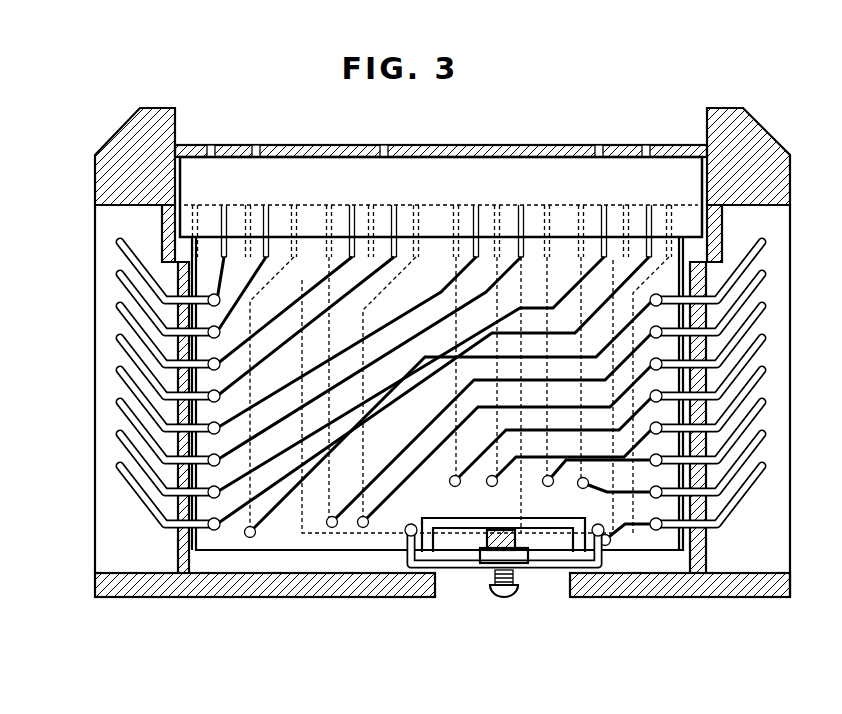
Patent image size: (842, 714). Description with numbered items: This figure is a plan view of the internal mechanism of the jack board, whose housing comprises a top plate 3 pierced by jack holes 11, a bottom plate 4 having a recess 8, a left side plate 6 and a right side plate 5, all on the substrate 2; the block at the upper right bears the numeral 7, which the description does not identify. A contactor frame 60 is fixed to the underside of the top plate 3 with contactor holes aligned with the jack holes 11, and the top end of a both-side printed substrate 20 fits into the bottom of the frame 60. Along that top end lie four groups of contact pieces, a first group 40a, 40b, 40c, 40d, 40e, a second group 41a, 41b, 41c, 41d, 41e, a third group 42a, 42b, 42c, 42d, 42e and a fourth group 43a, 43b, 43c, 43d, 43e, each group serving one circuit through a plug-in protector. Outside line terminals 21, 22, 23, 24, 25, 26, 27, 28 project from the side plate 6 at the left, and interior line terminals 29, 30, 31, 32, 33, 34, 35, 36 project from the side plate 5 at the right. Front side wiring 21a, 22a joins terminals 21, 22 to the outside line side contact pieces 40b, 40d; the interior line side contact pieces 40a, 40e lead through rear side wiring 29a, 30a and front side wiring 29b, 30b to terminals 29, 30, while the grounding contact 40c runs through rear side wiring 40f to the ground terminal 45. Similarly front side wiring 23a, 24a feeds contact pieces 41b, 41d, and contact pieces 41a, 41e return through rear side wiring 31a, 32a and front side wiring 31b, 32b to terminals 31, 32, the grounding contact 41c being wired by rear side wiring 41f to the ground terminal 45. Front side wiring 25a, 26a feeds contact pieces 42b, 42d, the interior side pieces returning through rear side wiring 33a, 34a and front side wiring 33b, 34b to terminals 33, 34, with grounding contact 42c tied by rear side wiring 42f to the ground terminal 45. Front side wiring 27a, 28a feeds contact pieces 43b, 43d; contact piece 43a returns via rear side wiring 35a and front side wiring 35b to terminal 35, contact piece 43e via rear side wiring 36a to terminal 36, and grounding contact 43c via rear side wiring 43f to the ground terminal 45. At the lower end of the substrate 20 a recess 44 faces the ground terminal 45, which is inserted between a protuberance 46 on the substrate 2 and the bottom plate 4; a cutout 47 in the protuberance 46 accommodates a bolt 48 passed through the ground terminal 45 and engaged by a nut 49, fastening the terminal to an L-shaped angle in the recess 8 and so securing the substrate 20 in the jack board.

The substrate 2 is at (786, 533).
The top plate 3 is at (329, 145).
The bottom plate 4 is at (348, 586).
The side plate 5 is at (705, 565).
The side plate 6 is at (185, 565).
The right housing block 7 is at (750, 135).
The recess 8 is at (125, 135).
The jack holes 11 is at (390, 147).
The both-side printed substrate 20 is at (327, 550).
The contactor frame 60 is at (565, 157).
The outside line terminal 21 is at (118, 243).
The outside line terminal 22 is at (118, 275).
The outside line terminal 23 is at (118, 307).
The outside line terminal 24 is at (118, 339).
The outside line terminal 25 is at (118, 371).
The outside line terminal 26 is at (118, 403).
The outside line terminal 27 is at (118, 435).
The outside line terminal 28 is at (118, 467).
The interior line terminal 29 is at (765, 243).
The interior line terminal 30 is at (765, 275).
The interior line terminal 31 is at (765, 307).
The interior line terminal 32 is at (765, 339).
The interior line terminal 33 is at (765, 371).
The interior line terminal 34 is at (765, 403).
The interior line terminal 35 is at (765, 435).
The interior line terminal 36 is at (765, 467).
The front side wiring 21a is at (235, 278).
The front side wiring 22a is at (248, 294).
The front side wiring 23a is at (284, 310).
The front side wiring 24a is at (305, 326).
The front side wiring 25a is at (346, 342).
The front side wiring 26a is at (369, 358).
The front side wiring 27a is at (410, 374).
The front side wiring 28a is at (433, 390).
The rear side wiring 29a is at (451, 416).
The rear side wiring 30a is at (476, 392).
The rear side wiring 31a is at (497, 395).
The rear side wiring 32a is at (520, 373).
The rear side wiring 33a is at (543, 376).
The rear side wiring 34a is at (584, 376).
The rear side wiring 35a is at (598, 376).
The rear side wiring 36a is at (638, 408).
The front side wiring 29b is at (256, 534).
The front side wiring 30b is at (340, 517).
The front side wiring 31b is at (368, 518).
The front side wiring 32b is at (457, 476).
The front side wiring 33b is at (496, 477).
The front side wiring 34b is at (551, 485).
The front side wiring 35b is at (611, 540).
The interior line side contact piece 40a is at (197, 205).
The outside line side contact piece 40b is at (224, 205).
The grounding contact 40c is at (248, 205).
The outside line side contact piece 40d is at (266, 205).
The interior line side contact piece 40e is at (294, 205).
The rear side wiring 40f is at (276, 394).
The interior line side contact piece 41a is at (329, 205).
The contact piece 41b is at (352, 205).
The grounding contact 41c is at (371, 205).
The contact piece 41d is at (394, 205).
The interior line side contact piece 41e is at (416, 205).
The rear side wiring 41f is at (372, 389).
The interior side contact piece 42a is at (456, 205).
The outside line side contact piece 42b is at (476, 205).
The grounding contact 42c is at (497, 205).
The outside line side contact piece 42d is at (521, 205).
The contact piece 42e is at (547, 205).
The rear side wiring 42f is at (501, 395).
The interior line side contact piece 43a is at (581, 205).
The outside line side contact piece 43b is at (604, 205).
The grounding contact 43c is at (626, 205).
The outside line side contact piece 43d is at (649, 205).
The interior line side contact piece 43e is at (669, 205).
The rear side wiring 43f is at (623, 395).
The recess 44 is at (466, 532).
The ground terminal 45 is at (553, 568).
The protuberance 46 is at (470, 560).
The cutout 47 is at (515, 540).
The bolt 48 is at (507, 598).
The nut 49 is at (518, 565).